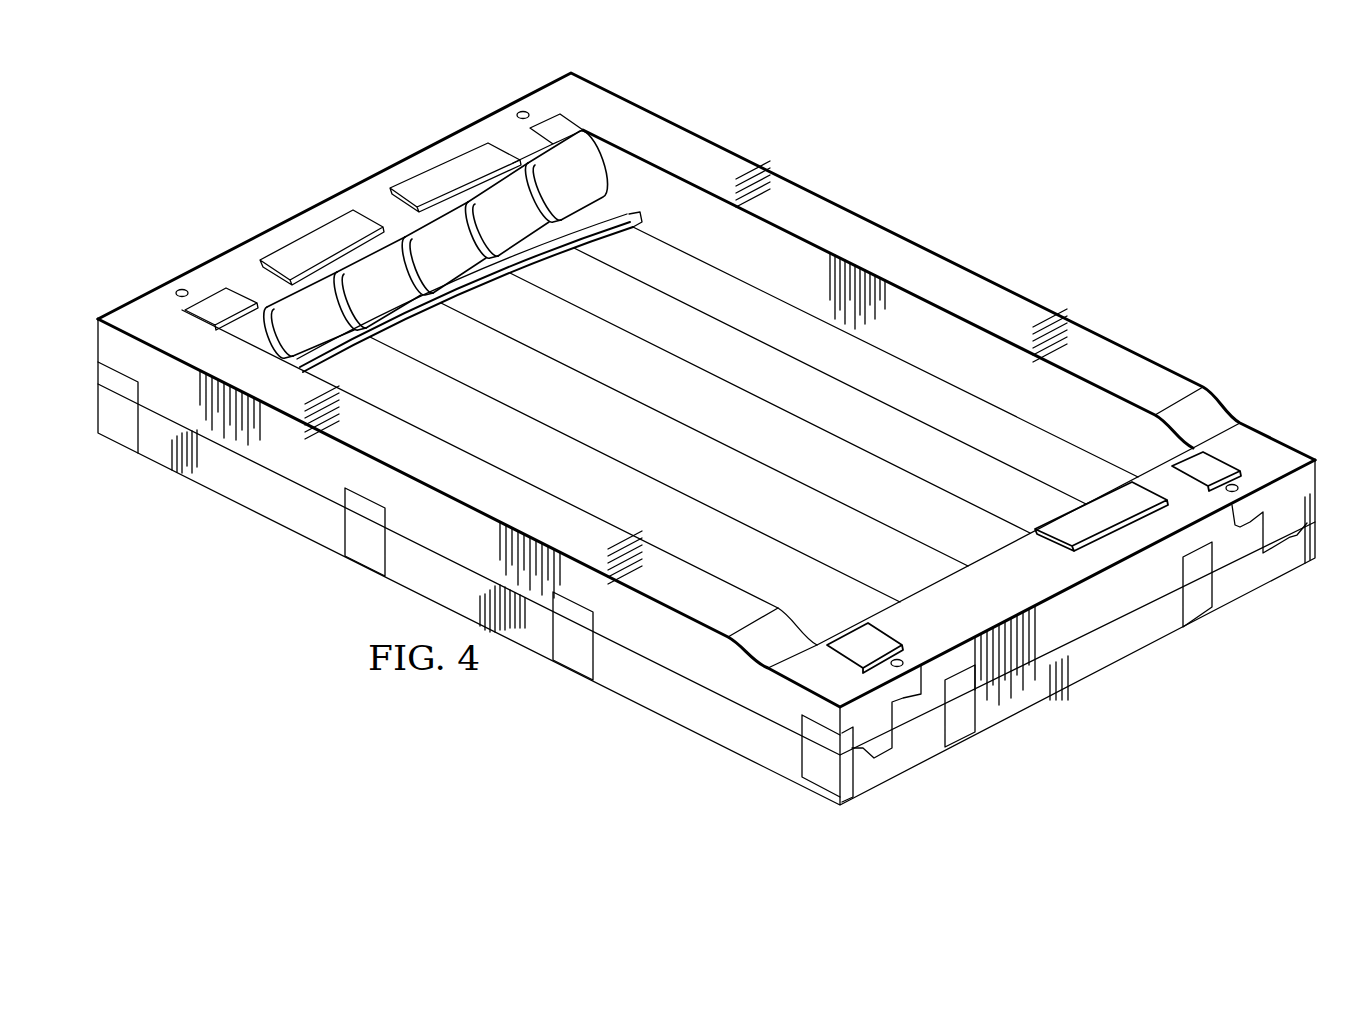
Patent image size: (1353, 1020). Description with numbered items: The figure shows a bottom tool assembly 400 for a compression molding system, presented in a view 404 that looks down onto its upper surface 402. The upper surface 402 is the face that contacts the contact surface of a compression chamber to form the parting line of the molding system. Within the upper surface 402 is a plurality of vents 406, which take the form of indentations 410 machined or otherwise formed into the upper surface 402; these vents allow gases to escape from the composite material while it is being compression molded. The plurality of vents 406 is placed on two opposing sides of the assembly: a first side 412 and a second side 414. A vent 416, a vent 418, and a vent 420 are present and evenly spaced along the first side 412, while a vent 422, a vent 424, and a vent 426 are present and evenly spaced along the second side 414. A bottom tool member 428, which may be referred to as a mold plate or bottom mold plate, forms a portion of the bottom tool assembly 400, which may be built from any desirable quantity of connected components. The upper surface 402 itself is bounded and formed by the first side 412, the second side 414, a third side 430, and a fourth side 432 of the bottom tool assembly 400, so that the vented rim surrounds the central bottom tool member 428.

The bottom tool assembly 400 is at (967, 157).
The upper surface 402 is at (875, 239).
The view 404 is at (1145, 141).
The plurality of vents 406 is at (300, 129).
The indentations 410 is at (298, 194).
The first side 412 is at (133, 261).
The second side 414 is at (1087, 719).
The vent 416 is at (250, 283).
The vent 418 is at (380, 207).
The vent 420 is at (512, 148).
The vent 422 is at (910, 627).
The vent 424 is at (1035, 550).
The vent 426 is at (1175, 487).
The bottom tool member 428 is at (712, 408).
The third side 430 is at (452, 462).
The fourth side 432 is at (976, 290).